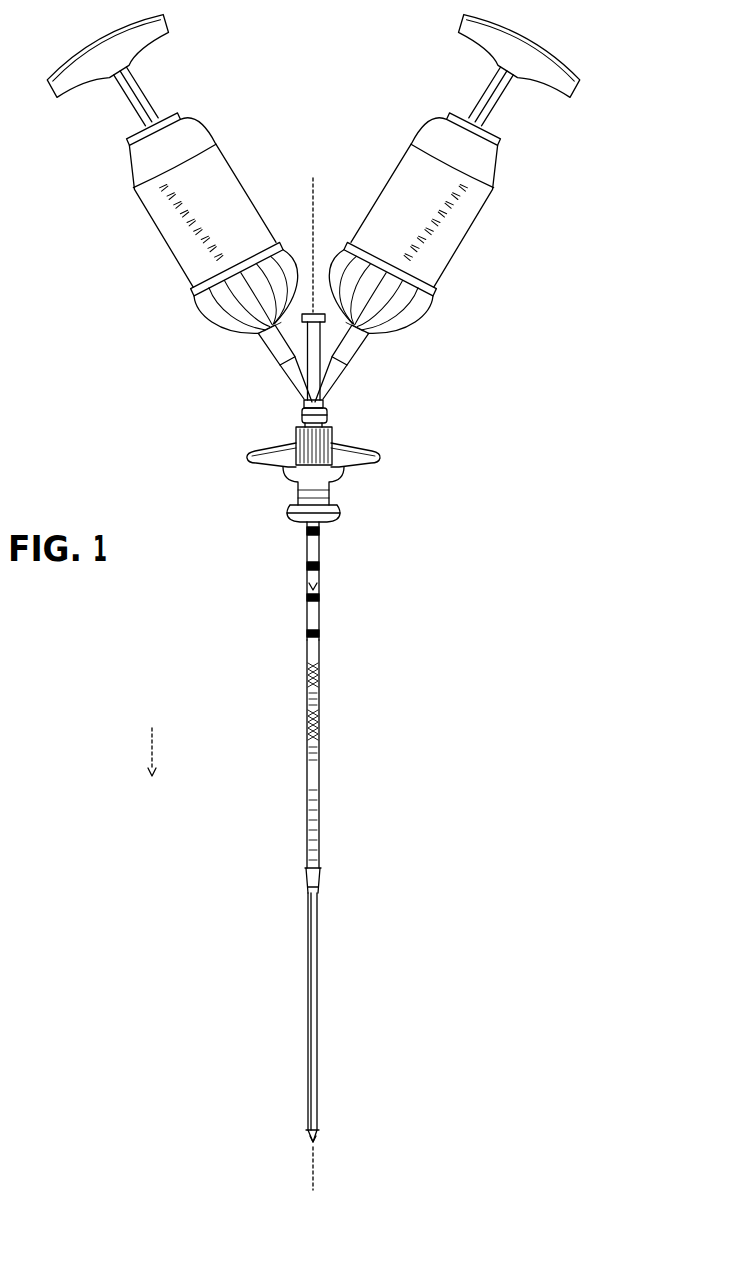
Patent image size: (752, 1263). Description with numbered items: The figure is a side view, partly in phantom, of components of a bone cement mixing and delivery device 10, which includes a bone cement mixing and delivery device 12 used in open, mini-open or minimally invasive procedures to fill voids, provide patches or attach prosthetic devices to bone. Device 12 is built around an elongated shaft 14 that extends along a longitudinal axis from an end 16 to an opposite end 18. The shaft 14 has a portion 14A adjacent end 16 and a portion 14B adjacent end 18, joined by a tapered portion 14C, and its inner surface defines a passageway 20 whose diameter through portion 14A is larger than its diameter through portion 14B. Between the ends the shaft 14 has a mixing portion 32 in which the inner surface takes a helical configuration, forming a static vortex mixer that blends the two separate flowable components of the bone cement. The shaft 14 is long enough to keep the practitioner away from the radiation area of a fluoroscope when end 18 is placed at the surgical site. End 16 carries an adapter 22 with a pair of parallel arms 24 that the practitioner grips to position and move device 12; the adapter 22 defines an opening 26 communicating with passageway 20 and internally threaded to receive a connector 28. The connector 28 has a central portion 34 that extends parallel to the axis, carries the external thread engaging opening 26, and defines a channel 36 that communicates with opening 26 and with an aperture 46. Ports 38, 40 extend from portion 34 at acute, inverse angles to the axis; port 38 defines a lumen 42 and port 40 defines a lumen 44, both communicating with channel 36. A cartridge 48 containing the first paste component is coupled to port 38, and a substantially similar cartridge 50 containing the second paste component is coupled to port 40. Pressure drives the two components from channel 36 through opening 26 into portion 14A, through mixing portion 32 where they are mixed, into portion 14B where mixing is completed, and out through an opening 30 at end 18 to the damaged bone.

The bone cement mixing and delivery device 10 is at (612, 93).
The bone cement mixing and delivery device 12 is at (485, 522).
The elongated shaft 14 is at (298, 554).
The portion 14A is at (315, 580).
The portion 14B is at (292, 1055).
The tapered portion 14C is at (331, 875).
The end 16 is at (322, 545).
The end 18 is at (307, 1127).
The passageway 20 is at (318, 580).
The adapter 22 is at (281, 500).
The arms 24 is at (381, 456).
The opening 26 is at (336, 424).
The connector 28 is at (285, 391).
The opening 30 is at (315, 1143).
The mixing portion 32 is at (330, 642).
The central portion 34 is at (318, 312).
The channel 36 is at (328, 397).
The port 38 is at (290, 373).
The port 40 is at (340, 369).
The lumen 42 is at (287, 383).
The lumen 44 is at (334, 380).
The aperture 46 is at (306, 306).
The cartridge 48 is at (200, 271).
The cartridge 50 is at (357, 262).